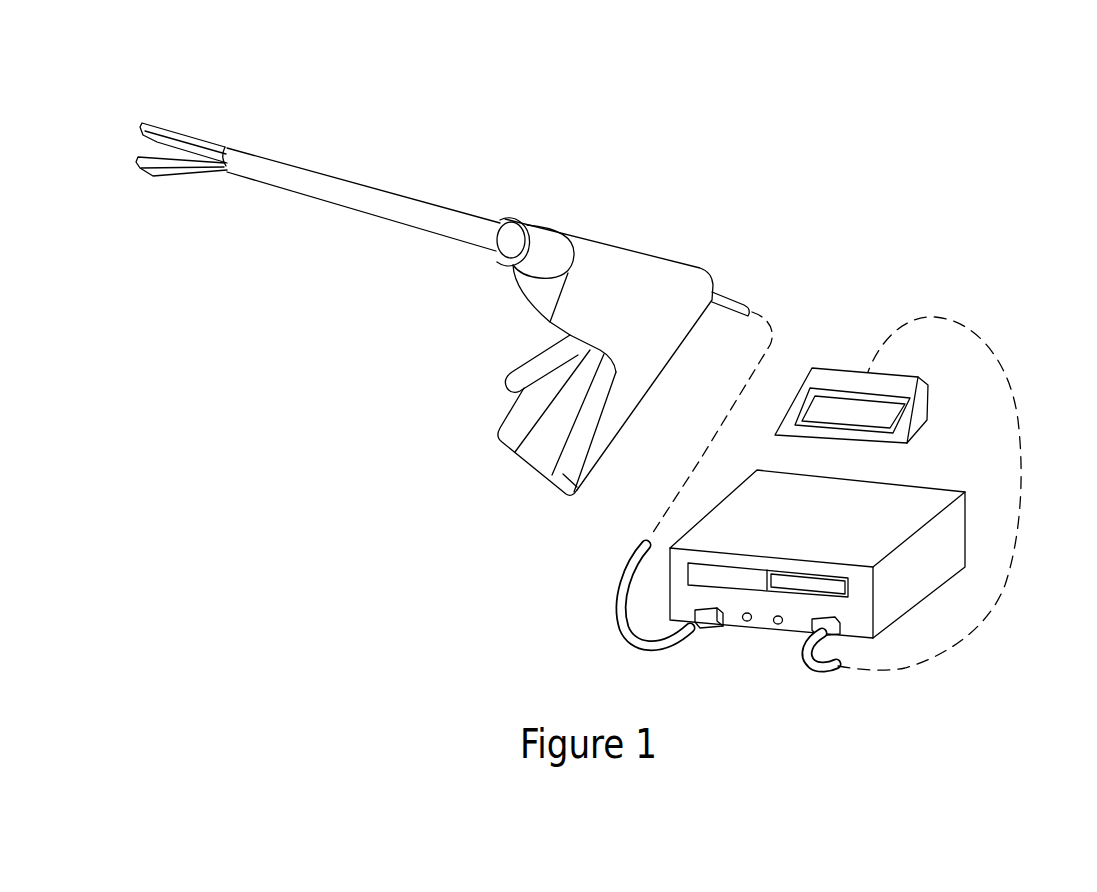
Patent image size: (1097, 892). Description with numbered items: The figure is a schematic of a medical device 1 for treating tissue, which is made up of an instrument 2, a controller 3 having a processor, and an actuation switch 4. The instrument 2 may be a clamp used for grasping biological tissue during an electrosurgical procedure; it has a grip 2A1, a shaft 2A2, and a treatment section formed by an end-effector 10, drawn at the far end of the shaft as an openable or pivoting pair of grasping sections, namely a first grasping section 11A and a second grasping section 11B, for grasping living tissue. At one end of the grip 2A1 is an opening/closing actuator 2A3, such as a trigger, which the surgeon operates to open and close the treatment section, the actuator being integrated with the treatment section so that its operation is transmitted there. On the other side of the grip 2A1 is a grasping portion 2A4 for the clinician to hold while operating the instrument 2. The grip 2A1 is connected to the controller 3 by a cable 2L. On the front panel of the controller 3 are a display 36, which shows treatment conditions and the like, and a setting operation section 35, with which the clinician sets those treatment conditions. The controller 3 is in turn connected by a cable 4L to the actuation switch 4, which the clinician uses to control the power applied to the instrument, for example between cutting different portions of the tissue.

The medical device 1 is at (790, 165).
The instrument 2 is at (489, 186).
The grip 2A1 is at (644, 252).
The shaft 2A2 is at (380, 186).
The opening/closing actuator 2A3 is at (522, 362).
The grasping portion 2A4 is at (600, 463).
The cable 2L is at (662, 514).
The controller 3 is at (962, 491).
The actuation switch 4 is at (841, 368).
The cable 4L is at (1027, 440).
The end-effector 10 is at (98, 86).
The first grasping section 11A is at (194, 133).
The second grasping section 11B is at (175, 172).
The setting operation section 35 is at (752, 626).
The display 36 is at (723, 587).